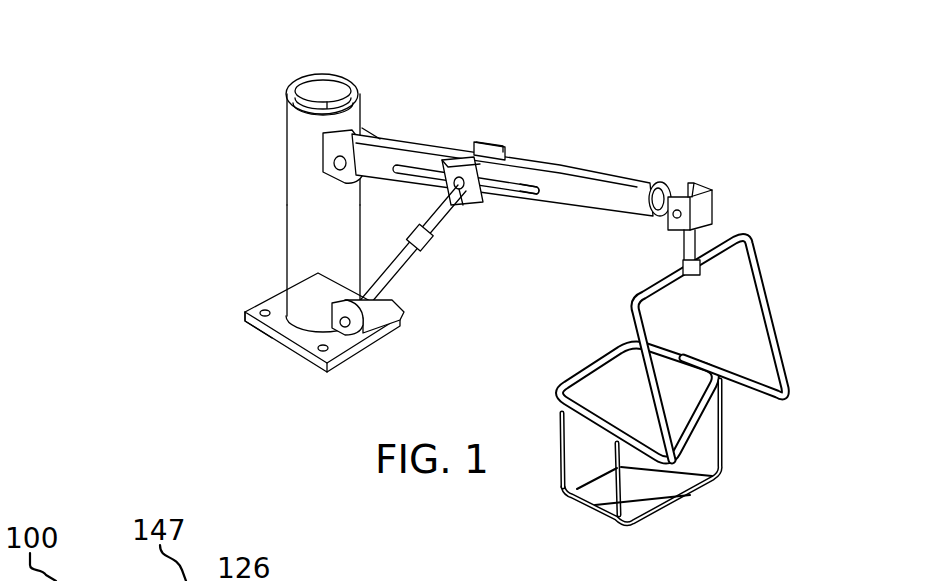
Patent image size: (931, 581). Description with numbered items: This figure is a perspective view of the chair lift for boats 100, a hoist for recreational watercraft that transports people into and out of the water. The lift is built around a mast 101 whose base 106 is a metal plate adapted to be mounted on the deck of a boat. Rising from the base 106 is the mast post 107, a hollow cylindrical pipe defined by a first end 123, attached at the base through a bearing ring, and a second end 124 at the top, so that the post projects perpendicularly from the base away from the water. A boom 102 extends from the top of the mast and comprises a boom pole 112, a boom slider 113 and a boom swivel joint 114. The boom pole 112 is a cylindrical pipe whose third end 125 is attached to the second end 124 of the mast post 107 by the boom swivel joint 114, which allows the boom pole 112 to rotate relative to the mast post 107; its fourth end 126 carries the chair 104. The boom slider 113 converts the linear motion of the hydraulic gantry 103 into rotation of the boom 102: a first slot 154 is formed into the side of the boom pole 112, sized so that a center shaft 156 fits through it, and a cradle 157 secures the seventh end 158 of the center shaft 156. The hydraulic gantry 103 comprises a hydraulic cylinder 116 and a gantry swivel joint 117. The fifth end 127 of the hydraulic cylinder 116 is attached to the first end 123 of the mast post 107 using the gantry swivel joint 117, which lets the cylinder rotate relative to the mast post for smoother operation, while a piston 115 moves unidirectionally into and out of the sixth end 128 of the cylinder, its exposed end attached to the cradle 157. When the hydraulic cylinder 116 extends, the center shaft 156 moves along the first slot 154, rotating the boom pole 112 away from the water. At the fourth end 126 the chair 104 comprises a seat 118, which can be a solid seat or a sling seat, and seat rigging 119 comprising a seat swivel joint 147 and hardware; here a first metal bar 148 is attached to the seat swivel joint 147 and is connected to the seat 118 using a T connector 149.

The chair lift for boats 100 is at (152, 116).
The mast 101 is at (287, 200).
The boom 102 is at (593, 166).
The hydraulic gantry 103 is at (410, 298).
The chair 104 is at (637, 528).
The base 106 is at (283, 340).
The mast post 107 is at (287, 239).
The boom pole 112 is at (432, 145).
The boom slider 113 is at (500, 142).
The boom swivel joint 114 is at (378, 130).
The piston 115 is at (464, 206).
The hydraulic cylinder 116 is at (418, 308).
The gantry swivel joint 117 is at (357, 340).
The seat 118 is at (575, 492).
The seat rigging 119 is at (700, 226).
The first end 123 is at (272, 332).
The second end 124 is at (363, 128).
The third end 125 is at (327, 136).
The fourth end 126 is at (654, 176).
The fifth end 127 is at (374, 332).
The sixth end 128 is at (472, 203).
The seat swivel joint 147 is at (715, 200).
The first metal bar 148 is at (685, 247).
The T connector 149 is at (695, 274).
The first slot 154 is at (530, 185).
The center shaft 156 is at (453, 190).
The cradle 157 is at (485, 140).
The seventh end 158 is at (432, 245).